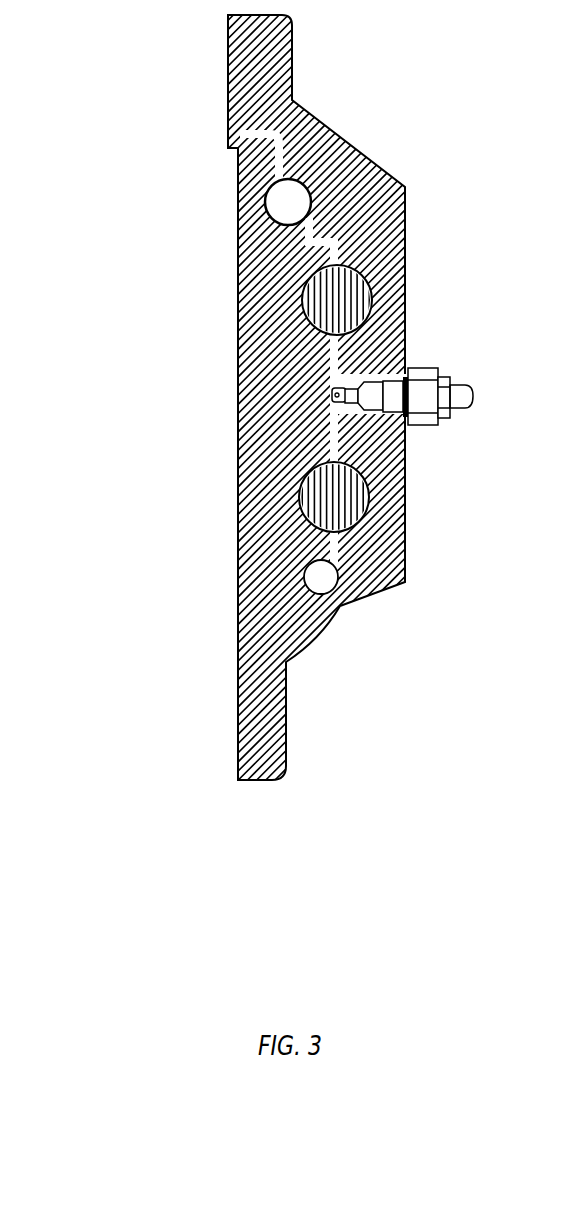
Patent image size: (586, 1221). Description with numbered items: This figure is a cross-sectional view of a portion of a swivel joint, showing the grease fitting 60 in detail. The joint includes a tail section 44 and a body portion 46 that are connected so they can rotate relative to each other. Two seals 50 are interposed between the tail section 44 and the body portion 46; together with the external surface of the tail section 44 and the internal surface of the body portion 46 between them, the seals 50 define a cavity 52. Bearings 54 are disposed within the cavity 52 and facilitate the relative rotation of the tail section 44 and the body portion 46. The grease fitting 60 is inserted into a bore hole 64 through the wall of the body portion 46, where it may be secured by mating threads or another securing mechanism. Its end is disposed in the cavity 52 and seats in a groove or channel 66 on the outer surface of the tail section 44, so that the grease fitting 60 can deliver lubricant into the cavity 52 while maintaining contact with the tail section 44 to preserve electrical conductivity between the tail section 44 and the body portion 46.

The tail section 44 is at (255, 712).
The body portion 46 is at (383, 540).
The seals 50 is at (288, 200).
The cavity 52 is at (330, 408).
The bearings 54 is at (318, 293).
The grease fitting 60 is at (468, 368).
The bore hole 64 is at (352, 415).
The groove or channel 66 is at (325, 385).